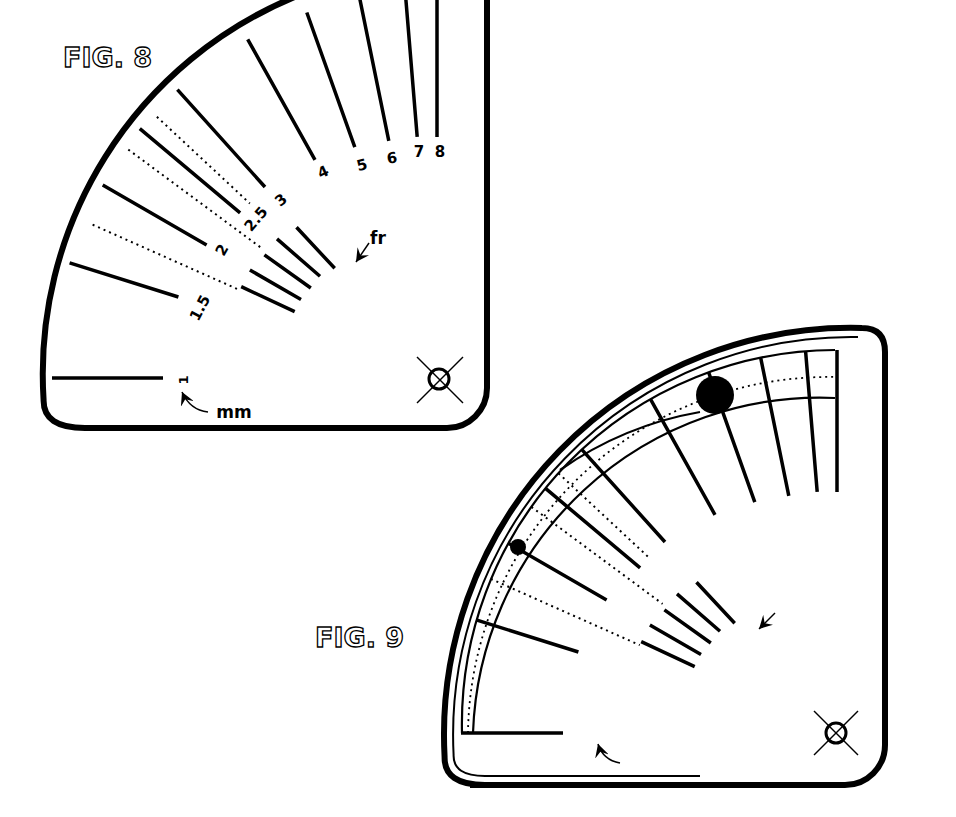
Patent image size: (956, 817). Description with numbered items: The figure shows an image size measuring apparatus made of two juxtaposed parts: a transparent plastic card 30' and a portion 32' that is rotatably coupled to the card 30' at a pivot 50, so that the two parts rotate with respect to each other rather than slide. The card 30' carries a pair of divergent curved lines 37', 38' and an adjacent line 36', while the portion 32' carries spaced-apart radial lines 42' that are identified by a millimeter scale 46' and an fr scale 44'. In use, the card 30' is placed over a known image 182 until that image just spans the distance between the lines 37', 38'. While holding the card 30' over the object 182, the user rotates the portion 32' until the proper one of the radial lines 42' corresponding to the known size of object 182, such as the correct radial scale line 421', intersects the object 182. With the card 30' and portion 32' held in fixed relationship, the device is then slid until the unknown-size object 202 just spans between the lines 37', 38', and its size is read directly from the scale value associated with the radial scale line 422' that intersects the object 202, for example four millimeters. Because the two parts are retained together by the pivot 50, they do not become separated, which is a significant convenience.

In FIG. 9, the transparent plastic card 30' is at (649, 556).
In FIG. 8, the portion 32' is at (265, 214).
In FIG. 9, the portion 32' is at (664, 556).
In FIG. 9, the outer ring line 36' is at (655, 536).
In FIG. 9, the divergent curved line 37' is at (648, 515).
In FIG. 9, the divergent curved line 38' is at (672, 565).
In FIG. 8, the radial lines 42' is at (499, 50).
In FIG. 9, the radial lines 42' is at (472, 781).
In FIG. 8, the fr scale 44' is at (346, 278).
In FIG. 9, the fr scale 44' is at (733, 633).
In FIG. 8, the mm scale 46' is at (494, 155).
In FIG. 9, the mm scale 46' is at (569, 782).
In FIG. 8, the pivot 50 is at (430, 380).
In FIG. 9, the pivot 50 is at (826, 734).
In FIG. 9, the known image 182 is at (511, 541).
In FIG. 9, the unknown-size object 202 is at (703, 374).
In FIG. 9, the radial scale line 421' is at (649, 541).
In FIG. 9, the radial scale line 422' is at (645, 441).